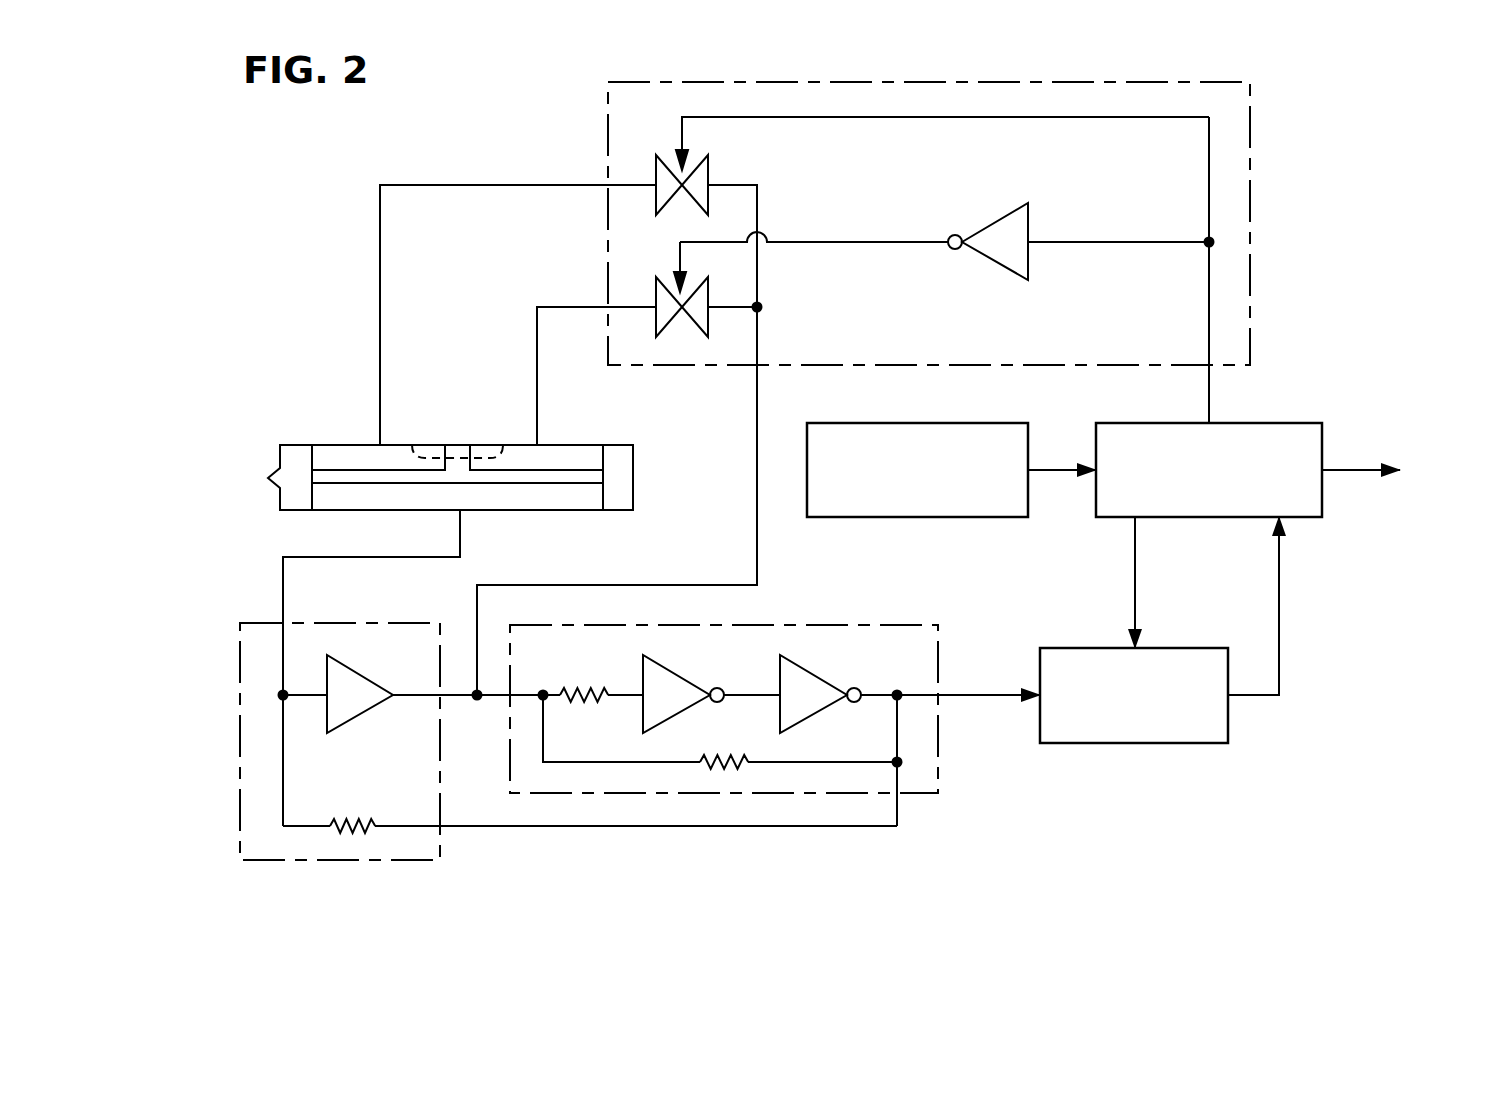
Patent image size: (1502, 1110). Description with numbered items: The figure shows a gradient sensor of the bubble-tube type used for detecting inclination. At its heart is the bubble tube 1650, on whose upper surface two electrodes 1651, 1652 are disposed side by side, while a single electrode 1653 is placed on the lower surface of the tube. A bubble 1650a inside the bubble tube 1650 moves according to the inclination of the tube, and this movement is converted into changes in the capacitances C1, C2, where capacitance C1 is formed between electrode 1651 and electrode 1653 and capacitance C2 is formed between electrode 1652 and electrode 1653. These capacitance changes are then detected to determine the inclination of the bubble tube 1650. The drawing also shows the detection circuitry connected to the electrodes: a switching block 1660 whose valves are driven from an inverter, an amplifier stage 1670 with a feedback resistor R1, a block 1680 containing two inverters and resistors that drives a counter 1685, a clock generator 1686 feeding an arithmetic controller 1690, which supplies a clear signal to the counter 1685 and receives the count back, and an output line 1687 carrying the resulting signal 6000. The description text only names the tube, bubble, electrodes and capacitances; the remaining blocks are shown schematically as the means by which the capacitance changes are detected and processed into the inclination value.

The bubble tube 1650 is at (280, 457).
The bubble 1650a is at (433, 455).
The electrode 1651 is at (340, 457).
The electrode 1652 is at (573, 458).
The electrode 1653 is at (485, 498).
The capacitance C1 is at (370, 472).
The capacitance C2 is at (542, 473).
The resistor R1 is at (354, 806).
The switching circuit 1660 is at (1253, 172).
The amplifier circuit 1670 is at (568, 778).
The oscillation circuit 1680 is at (660, 828).
The counter 1685 is at (1137, 743).
The clock generator 1686 is at (860, 517).
The output line 1687 is at (1358, 473).
The arithmetic controller 1690 is at (1187, 517).
The output signal 6000 is at (1445, 472).